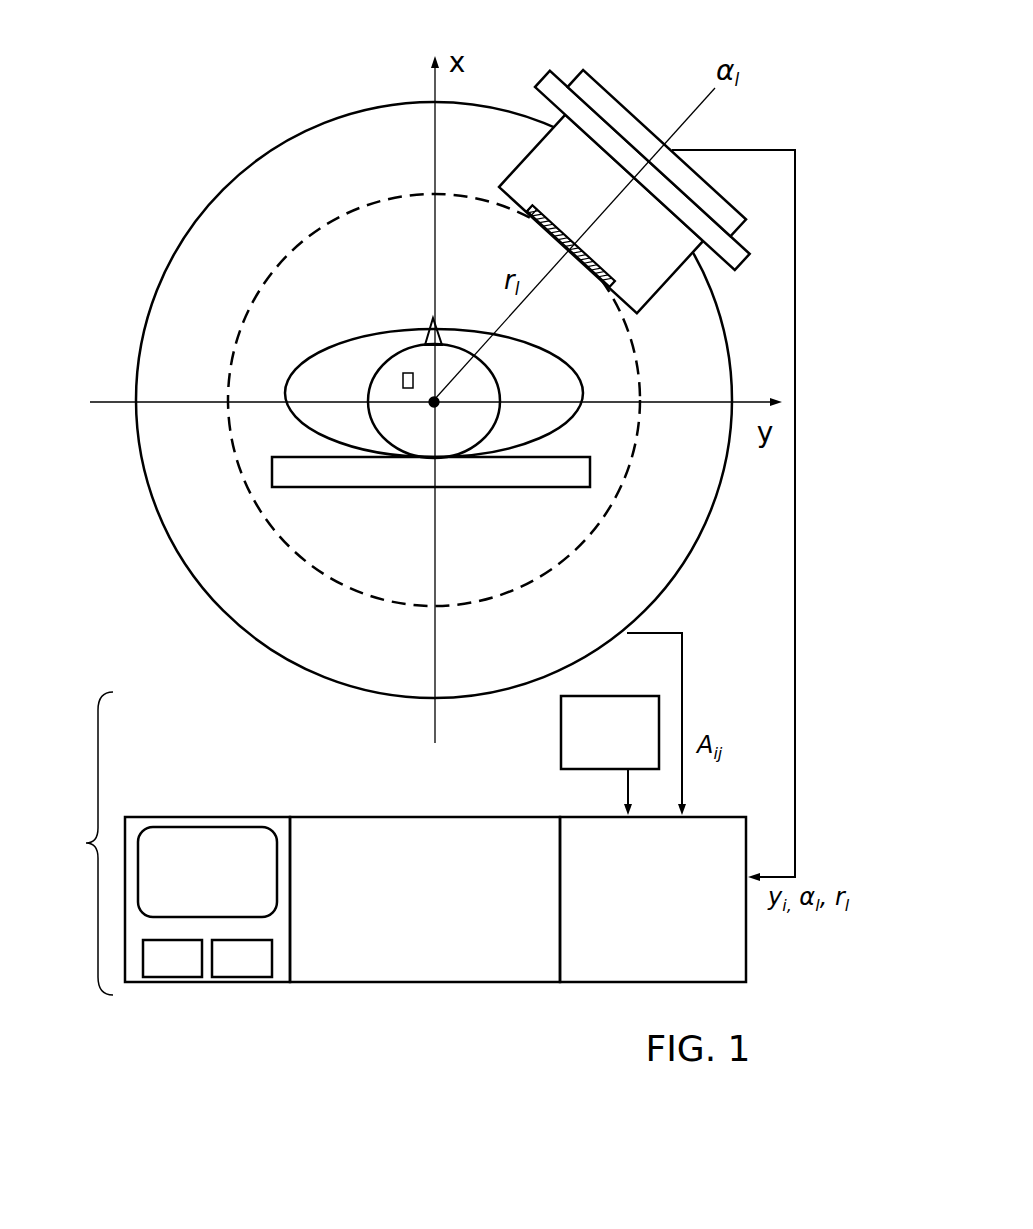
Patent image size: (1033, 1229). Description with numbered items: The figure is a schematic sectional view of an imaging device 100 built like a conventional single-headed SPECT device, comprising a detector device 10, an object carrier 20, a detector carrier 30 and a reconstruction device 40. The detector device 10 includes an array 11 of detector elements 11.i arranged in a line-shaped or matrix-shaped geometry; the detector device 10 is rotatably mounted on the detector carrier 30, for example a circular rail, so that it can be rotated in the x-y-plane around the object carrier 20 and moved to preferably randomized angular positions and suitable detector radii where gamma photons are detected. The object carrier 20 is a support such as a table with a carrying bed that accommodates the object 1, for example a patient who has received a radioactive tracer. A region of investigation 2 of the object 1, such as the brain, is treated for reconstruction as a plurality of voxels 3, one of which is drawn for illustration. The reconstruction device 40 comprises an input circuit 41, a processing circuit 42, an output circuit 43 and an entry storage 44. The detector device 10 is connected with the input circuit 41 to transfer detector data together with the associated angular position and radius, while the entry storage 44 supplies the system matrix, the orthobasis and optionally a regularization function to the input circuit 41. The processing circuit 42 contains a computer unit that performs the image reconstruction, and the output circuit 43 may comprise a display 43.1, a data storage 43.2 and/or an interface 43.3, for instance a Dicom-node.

The imaging device 100 is at (227, 109).
The detector carrier 30 is at (208, 202).
The detector device 10 is at (542, 178).
The array 11 is at (613, 285).
The detector element 11.i is at (530, 209).
The object 1 is at (330, 370).
The region of investigation 2 is at (383, 377).
The voxel 3 is at (401, 383).
The object carrier 20 is at (413, 477).
The reconstruction device 40 is at (44, 858).
The input circuit 41 is at (598, 823).
The processing circuit 42 is at (407, 823).
The output circuit 43 is at (207, 879).
The display 43.1 is at (207, 872).
The data storage 43.2 is at (172, 958).
The interface 43.3 is at (242, 958).
The entry storage 44 is at (568, 755).